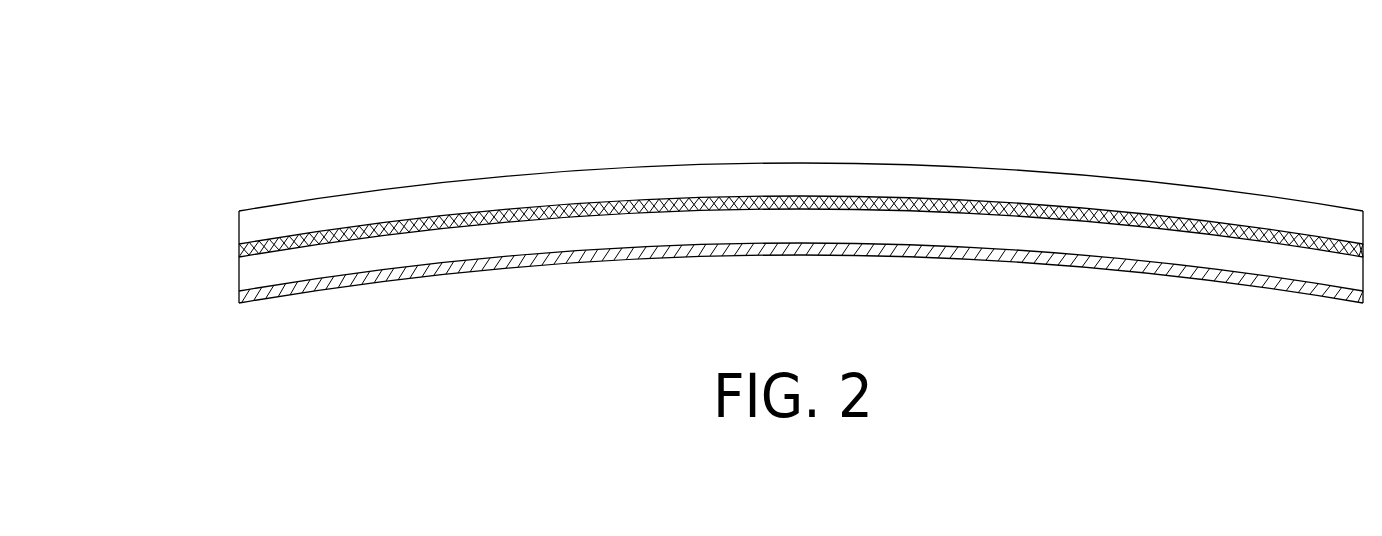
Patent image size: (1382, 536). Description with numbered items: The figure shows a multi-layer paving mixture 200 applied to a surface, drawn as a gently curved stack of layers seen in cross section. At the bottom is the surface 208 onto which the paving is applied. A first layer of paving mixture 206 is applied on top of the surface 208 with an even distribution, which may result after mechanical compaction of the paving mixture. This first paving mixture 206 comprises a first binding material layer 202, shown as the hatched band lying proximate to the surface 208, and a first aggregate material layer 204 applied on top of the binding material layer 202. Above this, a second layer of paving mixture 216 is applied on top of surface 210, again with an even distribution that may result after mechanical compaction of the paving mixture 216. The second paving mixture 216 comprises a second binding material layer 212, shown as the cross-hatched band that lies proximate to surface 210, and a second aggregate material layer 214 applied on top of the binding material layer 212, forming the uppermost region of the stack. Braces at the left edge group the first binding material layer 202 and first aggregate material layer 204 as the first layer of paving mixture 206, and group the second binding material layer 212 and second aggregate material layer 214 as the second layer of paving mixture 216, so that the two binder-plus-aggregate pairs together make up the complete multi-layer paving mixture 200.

The multi-layer paving mixture 200 is at (433, 92).
The first binding material layer 202 is at (1240, 286).
The first aggregate material layer 204 is at (1108, 246).
The first layer of paving mixture 206 is at (233, 259).
The surface 208 is at (572, 275).
The surface 210 is at (774, 196).
The second binding material layer 212 is at (990, 203).
The second aggregate material layer 214 is at (1085, 186).
The second layer of paving mixture 216 is at (233, 212).